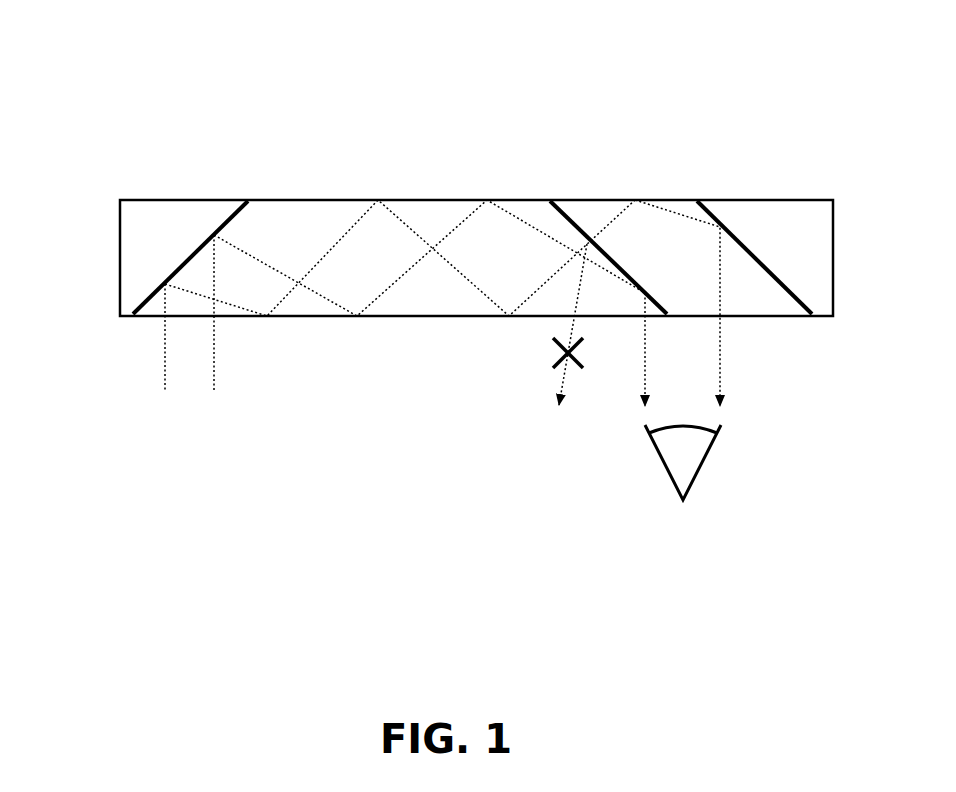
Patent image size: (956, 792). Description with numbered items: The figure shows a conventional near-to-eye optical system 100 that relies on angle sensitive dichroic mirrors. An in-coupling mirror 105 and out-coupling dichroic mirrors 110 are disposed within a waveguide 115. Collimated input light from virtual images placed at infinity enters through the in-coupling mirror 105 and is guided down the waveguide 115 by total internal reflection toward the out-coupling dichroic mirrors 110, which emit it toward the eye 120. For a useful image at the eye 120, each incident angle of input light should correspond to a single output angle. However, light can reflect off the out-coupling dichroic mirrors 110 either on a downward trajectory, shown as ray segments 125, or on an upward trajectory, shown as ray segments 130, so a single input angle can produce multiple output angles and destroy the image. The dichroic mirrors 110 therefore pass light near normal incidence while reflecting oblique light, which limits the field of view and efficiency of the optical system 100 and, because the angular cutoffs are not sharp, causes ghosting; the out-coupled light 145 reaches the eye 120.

The near-to-eye optical system 100 is at (168, 85).
The in-coupling mirror 105 is at (190, 257).
The out-coupling dichroic mirrors 110 is at (577, 222).
The waveguide 115 is at (300, 200).
The eye 120 is at (702, 467).
The ray segments 125 is at (507, 210).
The ray segments 130 is at (548, 278).
The out-coupled light ray 145 is at (678, 211).